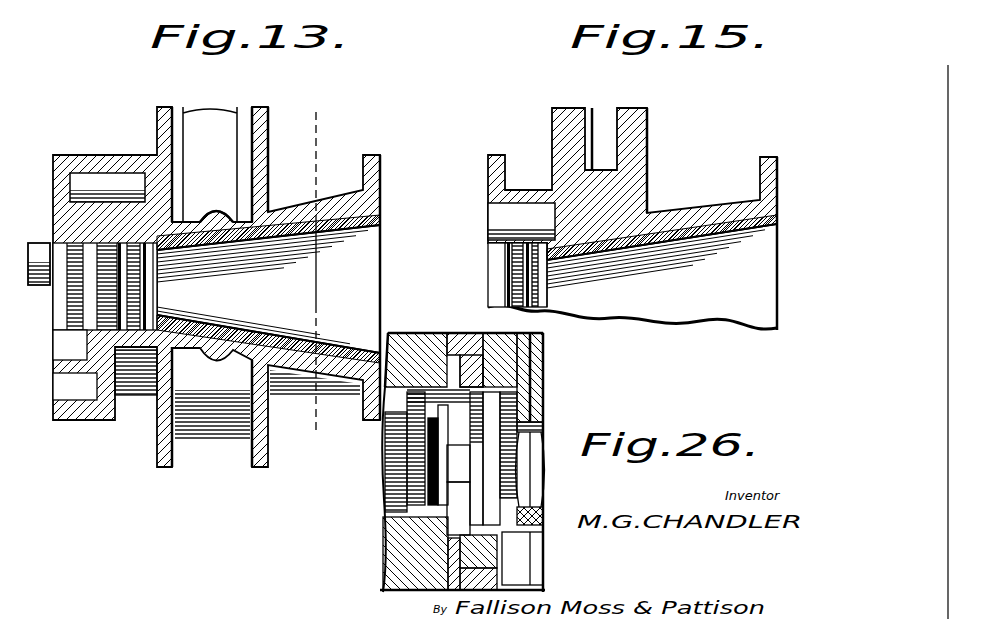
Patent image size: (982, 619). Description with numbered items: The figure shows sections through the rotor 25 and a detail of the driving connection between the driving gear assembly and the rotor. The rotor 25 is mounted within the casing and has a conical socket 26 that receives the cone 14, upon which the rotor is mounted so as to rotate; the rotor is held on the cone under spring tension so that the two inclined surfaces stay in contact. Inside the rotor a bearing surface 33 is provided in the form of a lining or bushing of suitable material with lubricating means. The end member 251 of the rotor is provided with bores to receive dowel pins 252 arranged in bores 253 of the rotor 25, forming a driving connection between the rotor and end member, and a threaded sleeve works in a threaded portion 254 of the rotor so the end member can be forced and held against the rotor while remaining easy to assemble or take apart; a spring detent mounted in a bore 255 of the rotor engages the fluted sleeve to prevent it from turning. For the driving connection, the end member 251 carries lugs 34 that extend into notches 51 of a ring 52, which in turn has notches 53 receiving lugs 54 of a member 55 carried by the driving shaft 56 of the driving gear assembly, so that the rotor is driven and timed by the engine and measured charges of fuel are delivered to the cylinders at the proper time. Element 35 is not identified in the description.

In FIG. 13, the cone 14 is at (316, 272).
In FIG. 13, the rotor 25 is at (313, 213).
In FIG. 15, the rotor 25 is at (648, 178).
In FIG. 26, the rotor 25 is at (545, 363).
In FIG. 26, the end member 251 is at (510, 341).
In FIG. 13, the dowel pins 252 is at (178, 130).
In FIG. 13, the bores 253 is at (190, 207).
In FIG. 13, the threaded portion 254 is at (118, 296).
In FIG. 15, the threaded portion 254 is at (512, 268).
In FIG. 15, the bore 255 is at (522, 212).
In FIG. 13, the conical socket 26 is at (371, 222).
In FIG. 15, the conical socket 26 is at (660, 233).
In FIG. 13, the bearing surface 33 is at (268, 289).
In FIG. 15, the bearing surface 33 is at (662, 266).
In FIG. 13, the lugs 34 is at (40, 243).
In FIG. 26, the lugs 34 is at (473, 372).
In FIG. 13, the pin 35 is at (107, 187).
In FIG. 26, the notches 51 is at (467, 357).
In FIG. 26, the ring 52 is at (460, 335).
In FIG. 26, the notches 53 is at (397, 463).
In FIG. 26, the lugs 54 is at (460, 463).
In FIG. 26, the member 55 is at (413, 563).
In FIG. 26, the driving shaft 56 is at (393, 466).